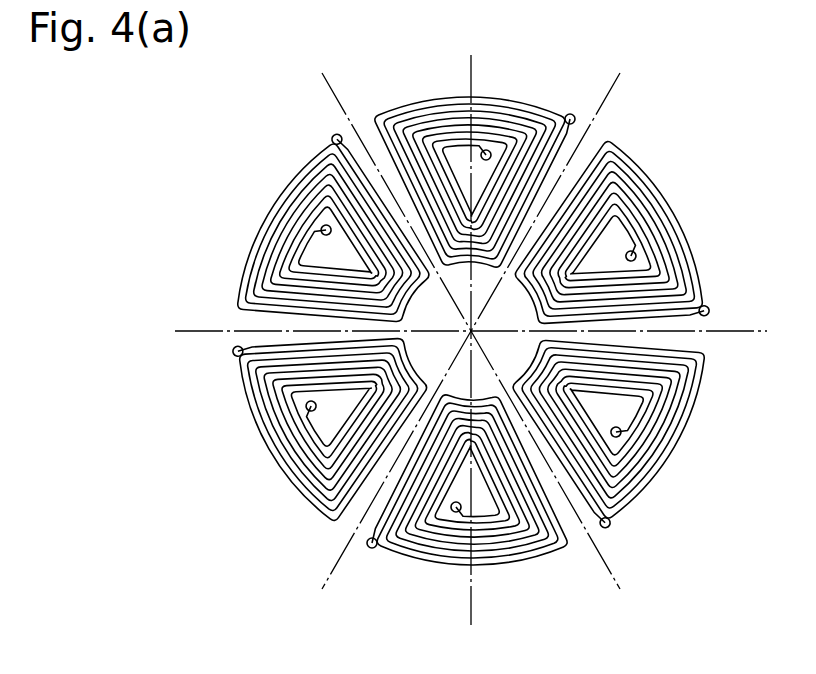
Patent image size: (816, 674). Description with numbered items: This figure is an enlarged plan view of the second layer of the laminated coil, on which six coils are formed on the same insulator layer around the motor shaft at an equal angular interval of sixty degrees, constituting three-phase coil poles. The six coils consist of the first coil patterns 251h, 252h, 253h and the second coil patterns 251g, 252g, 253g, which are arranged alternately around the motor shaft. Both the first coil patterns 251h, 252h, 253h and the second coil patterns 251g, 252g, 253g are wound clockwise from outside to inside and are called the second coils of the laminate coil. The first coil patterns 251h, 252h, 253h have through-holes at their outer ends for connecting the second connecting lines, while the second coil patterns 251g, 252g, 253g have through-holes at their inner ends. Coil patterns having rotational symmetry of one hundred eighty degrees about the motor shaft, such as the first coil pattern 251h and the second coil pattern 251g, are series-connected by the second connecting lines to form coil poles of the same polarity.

The first coil pattern 251h is at (527, 101).
The second coil pattern 252g is at (668, 202).
The first coil pattern 253h is at (685, 435).
The second coil pattern 251g is at (505, 562).
The first coil pattern 252h is at (273, 458).
The second coil pattern 253g is at (265, 217).